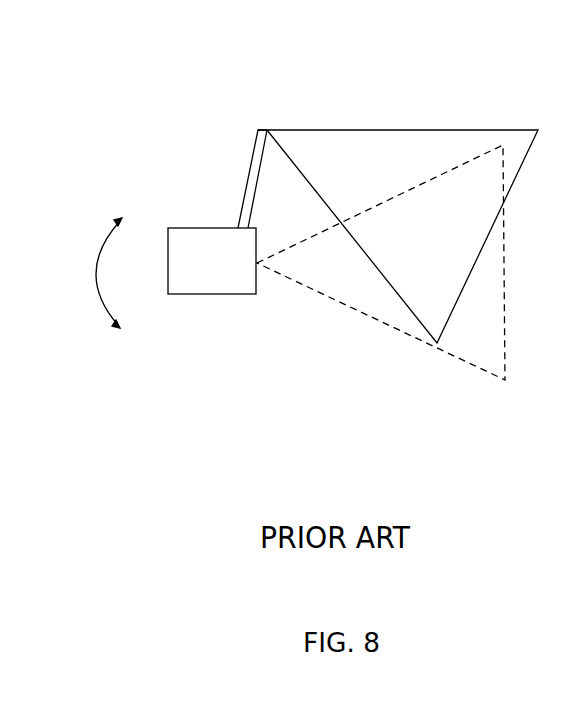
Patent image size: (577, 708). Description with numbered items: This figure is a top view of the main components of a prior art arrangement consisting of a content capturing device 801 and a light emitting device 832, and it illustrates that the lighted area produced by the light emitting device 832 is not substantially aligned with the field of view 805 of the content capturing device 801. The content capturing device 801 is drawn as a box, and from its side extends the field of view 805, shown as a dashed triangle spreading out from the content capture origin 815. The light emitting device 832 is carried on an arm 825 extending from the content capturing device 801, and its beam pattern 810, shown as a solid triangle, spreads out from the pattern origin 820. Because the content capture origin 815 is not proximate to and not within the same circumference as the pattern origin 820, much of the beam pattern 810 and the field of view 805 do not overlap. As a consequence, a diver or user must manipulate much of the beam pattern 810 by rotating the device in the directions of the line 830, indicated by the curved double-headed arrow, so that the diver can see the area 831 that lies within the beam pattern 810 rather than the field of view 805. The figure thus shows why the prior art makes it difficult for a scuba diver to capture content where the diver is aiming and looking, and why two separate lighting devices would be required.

The content capturing device 801 is at (214, 295).
The field of view 805 is at (463, 362).
The beam pattern 810 is at (418, 128).
The content capture origin 815 is at (272, 265).
The pattern origin 820 is at (288, 141).
The support arm 825 is at (245, 183).
The line 830 is at (87, 273).
The area 831 is at (274, 212).
The light emitting device 832 is at (258, 128).